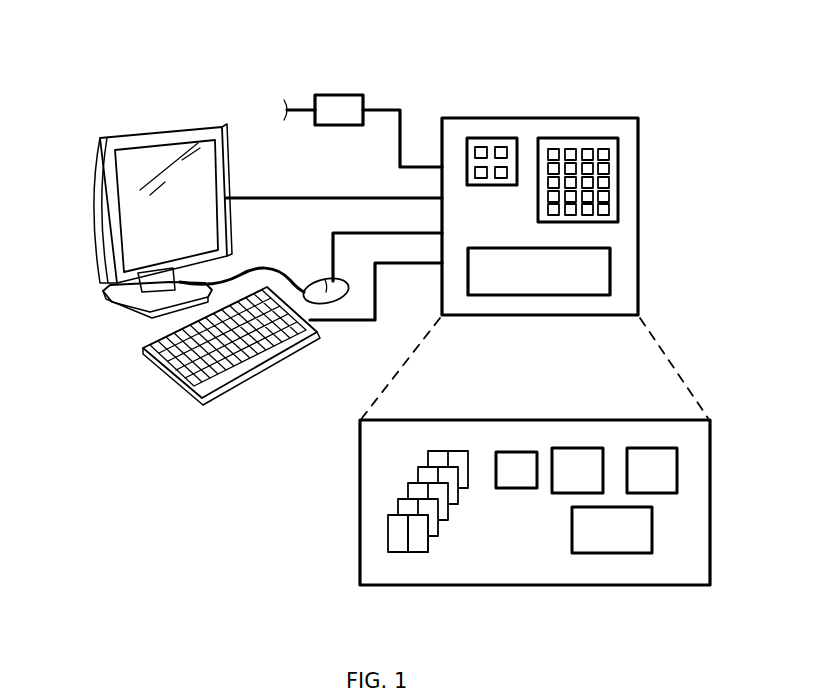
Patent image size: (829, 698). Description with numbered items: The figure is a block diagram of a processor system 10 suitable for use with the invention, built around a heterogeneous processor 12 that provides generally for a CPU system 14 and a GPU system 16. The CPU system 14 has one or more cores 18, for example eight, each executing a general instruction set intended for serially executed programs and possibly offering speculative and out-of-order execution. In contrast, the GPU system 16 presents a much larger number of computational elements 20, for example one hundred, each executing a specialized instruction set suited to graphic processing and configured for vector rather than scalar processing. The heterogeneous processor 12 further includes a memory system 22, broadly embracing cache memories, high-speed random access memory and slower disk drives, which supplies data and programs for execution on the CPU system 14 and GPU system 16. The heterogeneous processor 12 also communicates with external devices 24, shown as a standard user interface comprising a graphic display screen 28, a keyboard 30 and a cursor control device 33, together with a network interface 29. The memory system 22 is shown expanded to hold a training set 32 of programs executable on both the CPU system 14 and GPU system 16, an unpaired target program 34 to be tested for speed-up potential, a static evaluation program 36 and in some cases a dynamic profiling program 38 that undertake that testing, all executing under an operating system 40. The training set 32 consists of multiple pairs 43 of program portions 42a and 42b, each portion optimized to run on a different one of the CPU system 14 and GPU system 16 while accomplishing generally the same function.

The processor system 10 is at (606, 48).
The heterogeneous processor 12 is at (626, 118).
The CPU system 14 is at (500, 138).
The GPU system 16 is at (581, 138).
The cores 18 is at (476, 170).
The computational elements 20 is at (606, 154).
The memory system 22 is at (583, 265).
The external devices 24 is at (146, 90).
The graphic display screen 28 is at (137, 192).
The network interface 29 is at (333, 95).
The keyboard 30 is at (148, 353).
The training set 32 is at (345, 498).
The cursor control device 33 is at (312, 282).
The unpaired target program 34 is at (520, 455).
The static evaluation program 36 is at (648, 455).
The dynamic profiling program 38 is at (580, 455).
The operating system 40 is at (633, 530).
The program portion 42a is at (400, 532).
The program portion 42b is at (419, 540).
The pairs 43 is at (432, 458).